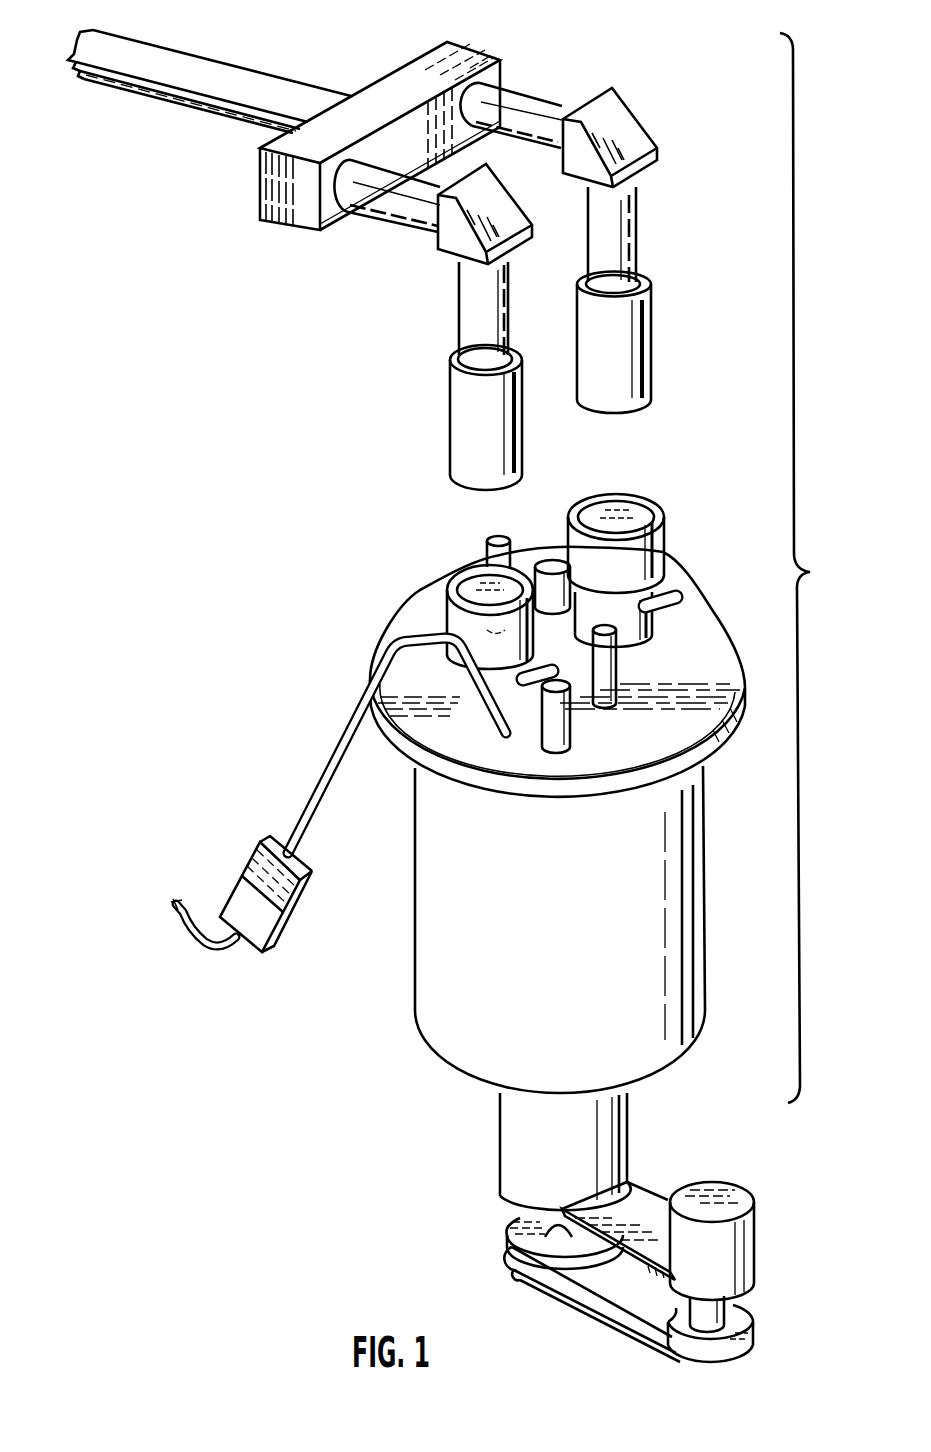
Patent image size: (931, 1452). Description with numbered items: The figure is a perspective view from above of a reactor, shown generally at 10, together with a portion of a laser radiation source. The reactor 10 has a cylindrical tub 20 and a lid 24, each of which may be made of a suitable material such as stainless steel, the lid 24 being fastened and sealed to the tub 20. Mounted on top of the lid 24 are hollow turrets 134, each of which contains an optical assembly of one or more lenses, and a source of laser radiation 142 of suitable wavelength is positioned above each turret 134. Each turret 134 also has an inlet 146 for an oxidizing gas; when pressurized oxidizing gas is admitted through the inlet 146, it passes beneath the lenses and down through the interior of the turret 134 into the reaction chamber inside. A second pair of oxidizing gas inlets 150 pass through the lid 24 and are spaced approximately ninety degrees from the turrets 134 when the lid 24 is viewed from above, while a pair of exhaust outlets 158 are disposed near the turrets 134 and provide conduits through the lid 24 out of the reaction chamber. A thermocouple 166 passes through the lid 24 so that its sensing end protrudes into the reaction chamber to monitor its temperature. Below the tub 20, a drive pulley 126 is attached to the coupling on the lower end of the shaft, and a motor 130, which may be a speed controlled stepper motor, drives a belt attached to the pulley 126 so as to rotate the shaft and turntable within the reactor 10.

The reactor 10 is at (270, 642).
The cylindrical tub 20 is at (579, 901).
The lid 24 is at (681, 741).
The drive pulley 126 is at (508, 1223).
The motor 130 is at (723, 1212).
The hollow turret 134 is at (446, 620).
The source of laser radiation 142 is at (606, 236).
The inlet for oxidizing gas 146 is at (684, 598).
The oxidizing gas inlet 150 is at (487, 547).
The exhaust outlet 158 is at (546, 560).
The thermocouple 166 is at (312, 797).